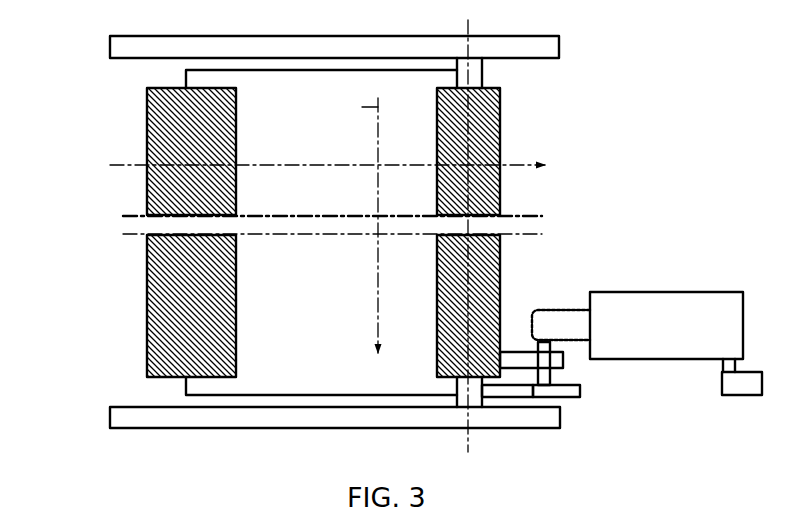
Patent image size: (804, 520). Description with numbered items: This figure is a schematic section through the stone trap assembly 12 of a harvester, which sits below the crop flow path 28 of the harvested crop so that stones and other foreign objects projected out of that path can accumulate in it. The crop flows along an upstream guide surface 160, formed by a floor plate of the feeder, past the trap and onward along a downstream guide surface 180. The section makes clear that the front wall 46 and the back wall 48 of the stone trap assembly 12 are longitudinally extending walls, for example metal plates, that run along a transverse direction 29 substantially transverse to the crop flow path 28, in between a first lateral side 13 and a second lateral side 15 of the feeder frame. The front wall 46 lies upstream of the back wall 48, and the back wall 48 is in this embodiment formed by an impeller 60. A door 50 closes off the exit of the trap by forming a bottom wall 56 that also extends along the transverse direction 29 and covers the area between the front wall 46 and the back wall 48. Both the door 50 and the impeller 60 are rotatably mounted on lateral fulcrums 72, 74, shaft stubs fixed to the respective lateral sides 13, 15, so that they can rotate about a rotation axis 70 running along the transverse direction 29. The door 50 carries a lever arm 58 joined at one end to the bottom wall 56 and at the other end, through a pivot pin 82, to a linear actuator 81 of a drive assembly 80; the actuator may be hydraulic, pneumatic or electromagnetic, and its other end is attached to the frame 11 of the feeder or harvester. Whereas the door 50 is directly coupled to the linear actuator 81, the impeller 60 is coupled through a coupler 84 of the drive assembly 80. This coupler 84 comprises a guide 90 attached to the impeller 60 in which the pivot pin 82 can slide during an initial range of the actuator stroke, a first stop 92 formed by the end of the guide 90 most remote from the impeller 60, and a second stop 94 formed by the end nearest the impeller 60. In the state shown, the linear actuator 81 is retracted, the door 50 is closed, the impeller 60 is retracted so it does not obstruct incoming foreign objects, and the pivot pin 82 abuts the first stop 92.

The frame 11 is at (744, 390).
The stone trap assembly 12 is at (108, 318).
The first lateral side 13 is at (494, 423).
The second lateral side 15 is at (546, 46).
The crop flow path 28 is at (538, 158).
The transverse direction 29 is at (378, 106).
The front wall 46 is at (240, 299).
The back wall 48 is at (434, 296).
The door 50 is at (270, 380).
The bottom wall 56 is at (330, 348).
The lever arm 58 is at (520, 365).
The impeller 60 is at (497, 183).
The rotation axis 70 is at (471, 447).
The lateral fulcrum 72 is at (461, 397).
The lateral fulcrum 74 is at (480, 77).
The drive assembly 80 is at (579, 339).
The linear actuator 81 is at (668, 352).
The pivot pin 82 is at (552, 378).
The coupler 84 is at (516, 340).
The guide 90 is at (520, 392).
The first stop 92 is at (556, 358).
The second stop 94 is at (496, 360).
The upstream guide surface 160 is at (156, 106).
The downstream guide surface 180 is at (480, 102).